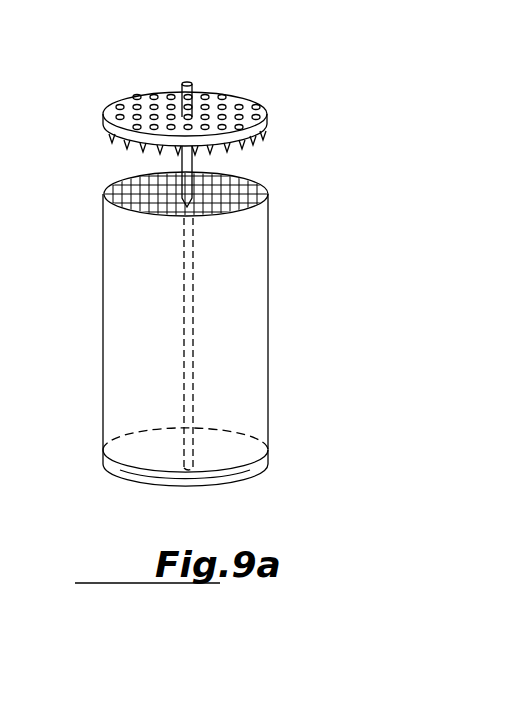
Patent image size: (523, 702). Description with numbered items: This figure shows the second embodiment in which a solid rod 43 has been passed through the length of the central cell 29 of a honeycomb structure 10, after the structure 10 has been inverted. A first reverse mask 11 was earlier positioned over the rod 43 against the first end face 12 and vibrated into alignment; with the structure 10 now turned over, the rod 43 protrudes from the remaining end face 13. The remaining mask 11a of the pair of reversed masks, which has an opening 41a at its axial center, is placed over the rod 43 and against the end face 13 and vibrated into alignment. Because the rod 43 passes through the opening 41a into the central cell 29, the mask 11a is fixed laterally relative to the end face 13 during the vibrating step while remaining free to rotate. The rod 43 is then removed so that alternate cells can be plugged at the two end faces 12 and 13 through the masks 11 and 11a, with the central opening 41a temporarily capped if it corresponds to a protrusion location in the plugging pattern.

The honeycomb structure 10 is at (268, 315).
The first reverse mask 11 is at (263, 463).
The remaining mask 11a is at (270, 116).
The first end face 12 is at (140, 474).
The remaining end face 13 is at (137, 198).
The central cell 29 is at (191, 206).
The opening 41a is at (202, 116).
The solid rod 43 is at (190, 86).